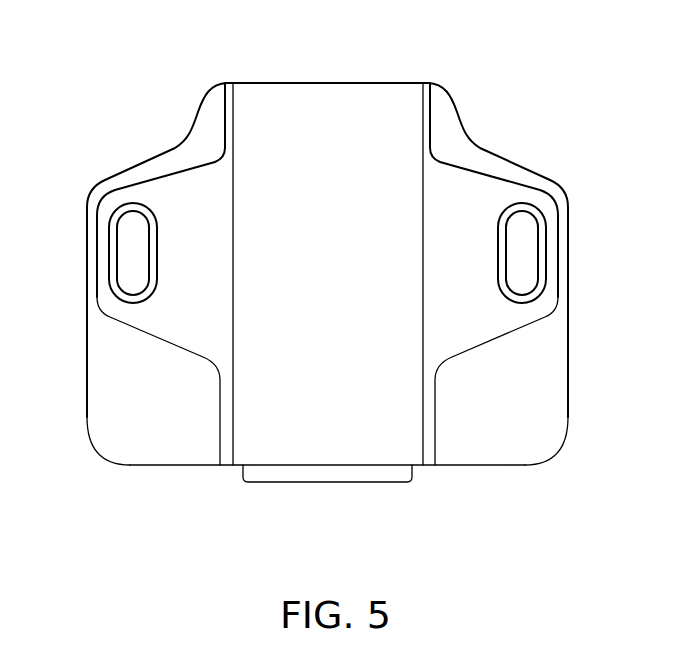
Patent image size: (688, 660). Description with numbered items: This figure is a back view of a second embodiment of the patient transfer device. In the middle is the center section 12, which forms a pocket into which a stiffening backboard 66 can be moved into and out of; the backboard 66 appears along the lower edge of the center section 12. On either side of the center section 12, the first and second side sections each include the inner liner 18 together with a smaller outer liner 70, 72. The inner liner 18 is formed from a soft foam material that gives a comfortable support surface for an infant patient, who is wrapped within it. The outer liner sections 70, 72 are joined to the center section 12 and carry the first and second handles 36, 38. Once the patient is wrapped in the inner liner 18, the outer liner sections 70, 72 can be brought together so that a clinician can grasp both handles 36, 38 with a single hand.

The center section 12 is at (313, 100).
The inner liner 18 is at (467, 110).
The outer liner 72 is at (170, 193).
The outer liner 70 is at (487, 193).
The second handle 38 is at (115, 235).
The first handle 36 is at (542, 235).
The backboard 66 is at (383, 472).